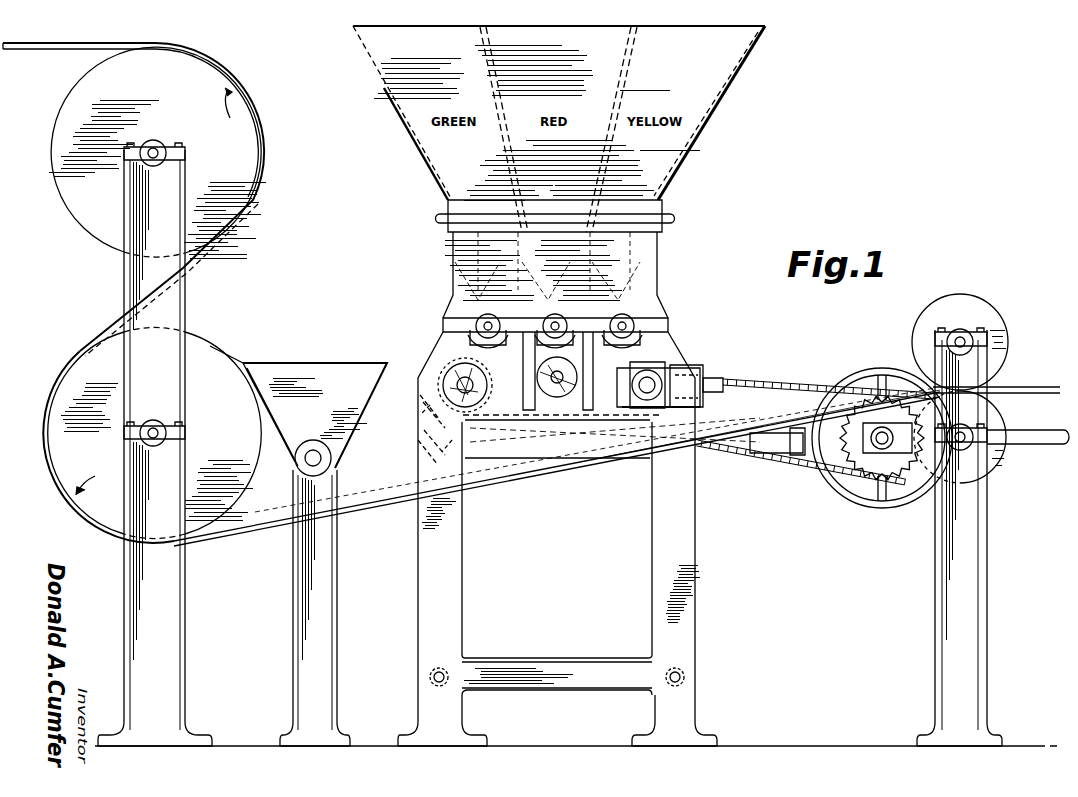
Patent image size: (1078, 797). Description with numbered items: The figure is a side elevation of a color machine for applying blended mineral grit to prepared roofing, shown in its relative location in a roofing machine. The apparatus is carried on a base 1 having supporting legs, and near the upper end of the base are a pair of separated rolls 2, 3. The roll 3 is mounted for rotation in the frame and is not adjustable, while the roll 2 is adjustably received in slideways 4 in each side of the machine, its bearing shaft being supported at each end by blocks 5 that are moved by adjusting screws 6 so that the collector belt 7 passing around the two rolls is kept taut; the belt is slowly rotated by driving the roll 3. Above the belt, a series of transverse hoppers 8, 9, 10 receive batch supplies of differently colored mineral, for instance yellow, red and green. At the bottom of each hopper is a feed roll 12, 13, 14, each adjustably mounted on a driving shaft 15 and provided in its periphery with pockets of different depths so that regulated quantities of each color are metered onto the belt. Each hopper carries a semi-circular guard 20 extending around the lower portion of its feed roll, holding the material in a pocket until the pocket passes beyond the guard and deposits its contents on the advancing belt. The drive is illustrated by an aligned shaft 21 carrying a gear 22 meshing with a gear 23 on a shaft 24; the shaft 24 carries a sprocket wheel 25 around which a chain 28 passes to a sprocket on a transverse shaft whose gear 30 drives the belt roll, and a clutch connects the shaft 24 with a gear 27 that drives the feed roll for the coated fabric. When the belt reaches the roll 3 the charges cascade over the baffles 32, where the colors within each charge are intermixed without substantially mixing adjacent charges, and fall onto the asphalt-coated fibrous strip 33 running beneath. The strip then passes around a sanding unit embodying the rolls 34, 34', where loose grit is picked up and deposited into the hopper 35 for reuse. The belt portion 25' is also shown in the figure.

The base 1 is at (692, 578).
The roll 2 is at (700, 408).
The roll 3 is at (472, 458).
The slideways 4 is at (703, 372).
The blocks 5 is at (668, 370).
The adjusting screws 6 is at (716, 393).
The collector belt 7 is at (648, 362).
The hopper 8 is at (559, 113).
The hopper 9 is at (559, 129).
The hopper 10 is at (408, 113).
The feed roll 12 is at (636, 328).
The feed roll 13 is at (560, 318).
The feed roll 14 is at (481, 314).
The driving shaft 15 is at (620, 312).
The semi-circular guard 20 is at (455, 352).
The aligned shaft 21 is at (1030, 448).
The gear 22 is at (802, 468).
The gear 23 is at (848, 498).
The shaft 24 is at (890, 450).
The sprocket wheel 25 is at (770, 409).
The belt portion 25' is at (615, 430).
The gear 27 is at (862, 460).
The chain 28 is at (800, 388).
The gear 30 is at (556, 385).
The baffles 32 is at (420, 460).
The strip 33 is at (256, 525).
The roll 34 is at (152, 431).
The roll 34' is at (154, 199).
The hopper 35 is at (310, 372).